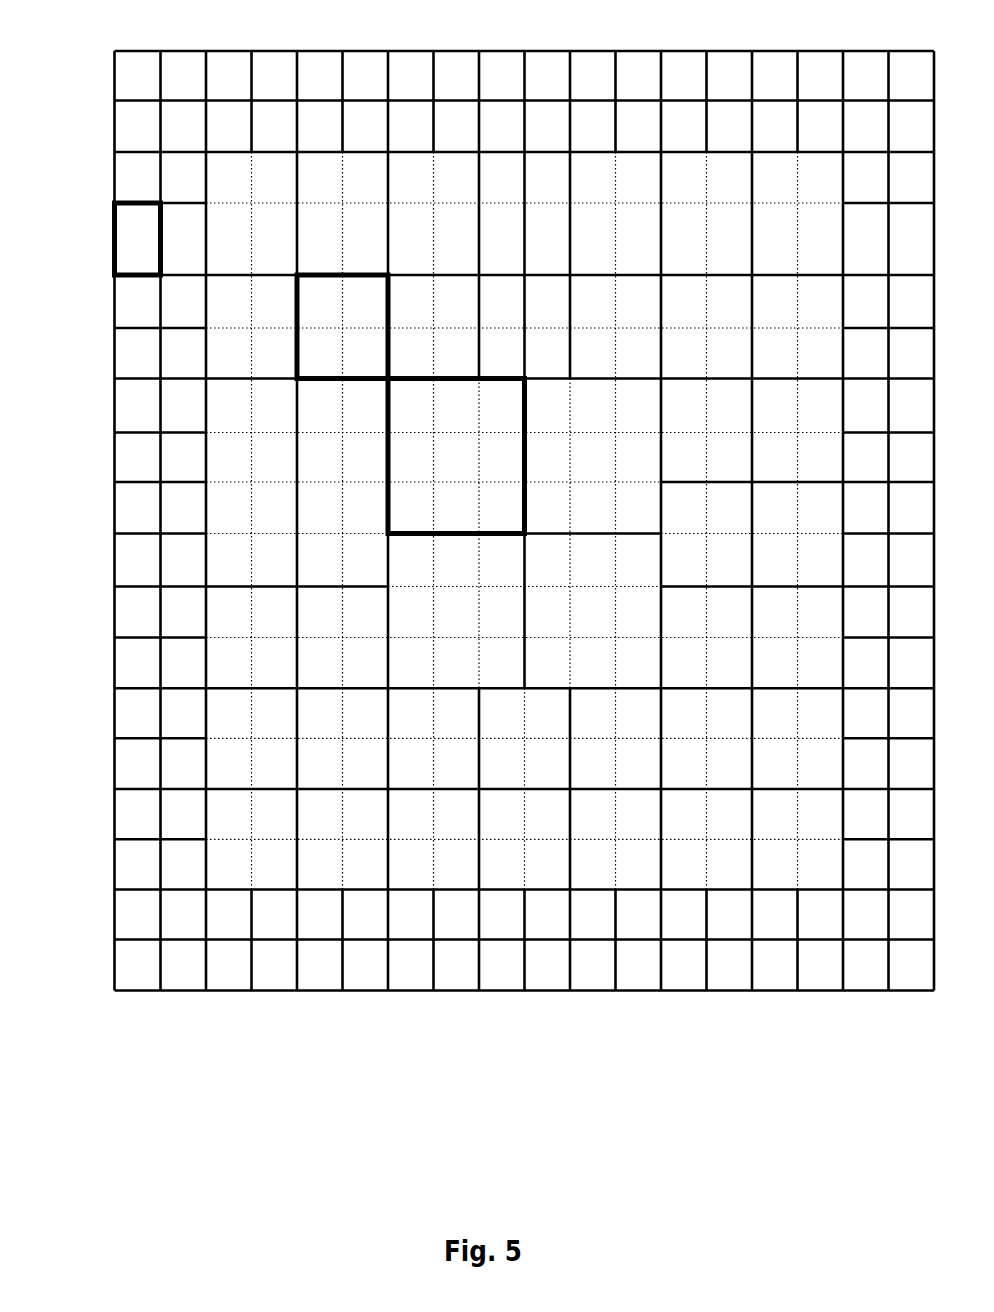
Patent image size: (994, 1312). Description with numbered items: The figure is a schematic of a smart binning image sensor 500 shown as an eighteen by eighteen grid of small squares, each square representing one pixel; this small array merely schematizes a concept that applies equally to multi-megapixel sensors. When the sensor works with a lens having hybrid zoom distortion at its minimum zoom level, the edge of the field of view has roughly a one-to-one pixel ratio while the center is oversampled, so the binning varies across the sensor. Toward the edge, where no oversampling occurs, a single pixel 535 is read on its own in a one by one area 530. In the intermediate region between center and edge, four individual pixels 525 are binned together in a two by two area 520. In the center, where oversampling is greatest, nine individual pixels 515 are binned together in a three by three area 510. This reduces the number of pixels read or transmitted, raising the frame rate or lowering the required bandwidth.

The image sensor 500 is at (525, 505).
The 3×3 area 510 is at (388, 408).
The individual pixels 515 is at (456, 456).
The 2×2 area 520 is at (297, 275).
The individual pixels 525 is at (342, 327).
The 1×1 area 530 is at (114, 205).
The pixel 535 is at (138, 239).